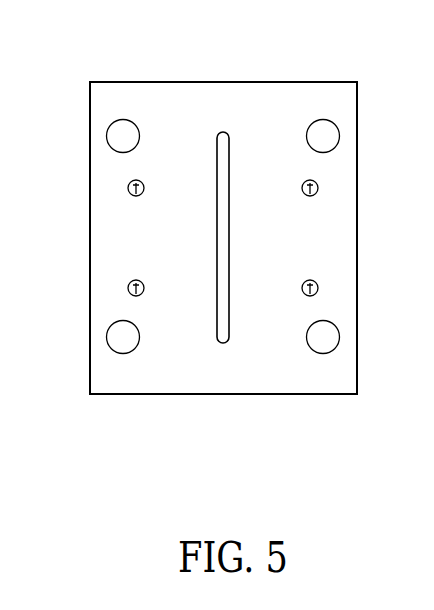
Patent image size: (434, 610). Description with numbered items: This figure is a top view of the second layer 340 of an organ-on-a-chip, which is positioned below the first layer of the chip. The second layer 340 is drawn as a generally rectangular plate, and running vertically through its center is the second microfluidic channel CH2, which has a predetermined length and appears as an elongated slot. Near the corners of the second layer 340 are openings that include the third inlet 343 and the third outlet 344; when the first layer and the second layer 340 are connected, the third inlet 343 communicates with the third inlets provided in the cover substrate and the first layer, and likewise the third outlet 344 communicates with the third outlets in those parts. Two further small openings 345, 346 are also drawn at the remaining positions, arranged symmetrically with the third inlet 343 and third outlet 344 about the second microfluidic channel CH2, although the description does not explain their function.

The second layer 340 is at (308, 82).
The second microfluidic channel CH2 is at (222, 233).
The third inlet 343 is at (318, 288).
The third outlet 344 is at (128, 188).
The pin hole 345 is at (318, 188).
The pin hole 346 is at (128, 288).